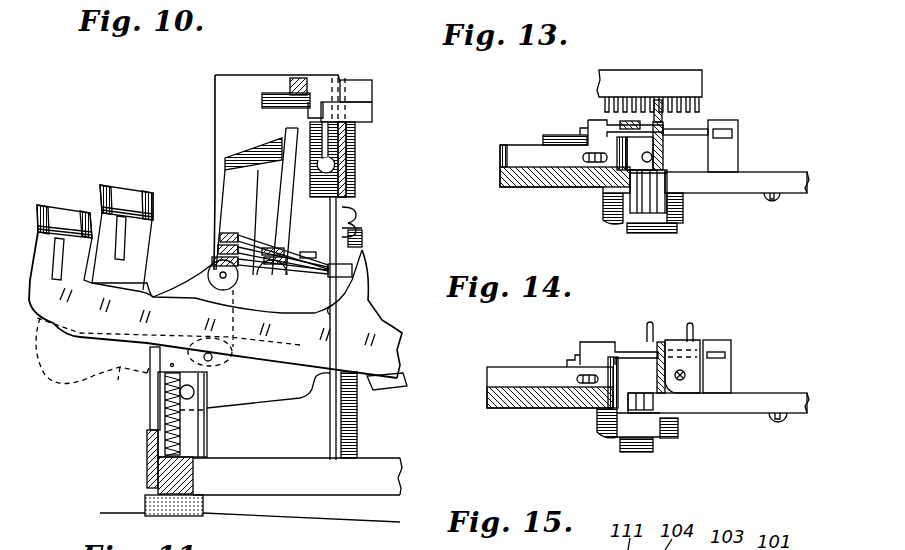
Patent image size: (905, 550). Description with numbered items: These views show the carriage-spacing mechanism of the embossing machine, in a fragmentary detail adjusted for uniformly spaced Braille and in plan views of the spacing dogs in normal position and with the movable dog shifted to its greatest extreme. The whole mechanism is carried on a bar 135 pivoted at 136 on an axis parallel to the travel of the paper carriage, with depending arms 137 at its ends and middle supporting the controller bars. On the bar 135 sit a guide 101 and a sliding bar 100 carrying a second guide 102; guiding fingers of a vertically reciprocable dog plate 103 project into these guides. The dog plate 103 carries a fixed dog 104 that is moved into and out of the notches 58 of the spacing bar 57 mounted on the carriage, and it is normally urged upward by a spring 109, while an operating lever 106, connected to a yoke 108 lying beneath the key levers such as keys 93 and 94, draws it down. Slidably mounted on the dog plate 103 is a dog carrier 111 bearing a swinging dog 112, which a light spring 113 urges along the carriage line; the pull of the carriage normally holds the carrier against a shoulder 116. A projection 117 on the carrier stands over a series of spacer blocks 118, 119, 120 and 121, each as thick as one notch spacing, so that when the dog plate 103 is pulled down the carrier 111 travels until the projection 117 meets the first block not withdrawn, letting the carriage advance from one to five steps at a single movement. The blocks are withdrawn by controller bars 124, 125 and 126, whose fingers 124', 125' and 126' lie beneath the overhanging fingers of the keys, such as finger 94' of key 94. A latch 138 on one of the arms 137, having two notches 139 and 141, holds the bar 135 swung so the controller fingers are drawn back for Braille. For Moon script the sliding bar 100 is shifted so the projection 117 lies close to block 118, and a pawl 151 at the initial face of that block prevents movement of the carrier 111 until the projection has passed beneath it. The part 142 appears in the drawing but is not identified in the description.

In FIG. 13, the spacing bar 57 is at (622, 78).
In FIG. 13, the notch of spacing bar 58 is at (703, 92).
In FIG. 10, the key lever 93 is at (135, 190).
In FIG. 10, the key lever 94 is at (241, 264).
In FIG. 10, the overhanging finger 94' is at (396, 226).
In FIG. 13, the sliding bar 100 is at (532, 157).
In FIG. 14, the sliding bar 100 is at (505, 375).
In FIG. 13, the guide 101 is at (738, 122).
In FIG. 14, the guide 101 is at (735, 352).
In FIG. 13, the guide 102 is at (605, 125).
In FIG. 14, the guide 102 is at (592, 342).
In FIG. 10, the dog plate 103 is at (355, 167).
In FIG. 13, the dog plate 103 is at (697, 130).
In FIG. 14, the dog plate 103 is at (718, 352).
In FIG. 10, the fixed dog 104 is at (368, 88).
In FIG. 13, the fixed dog 104 is at (660, 100).
In FIG. 14, the fixed dog 104 is at (651, 324).
In FIG. 10, the operating lever 106 is at (280, 402).
In FIG. 10, the yoke 108 is at (387, 381).
In FIG. 10, the spring 109 is at (357, 437).
In FIG. 10, the dog carrier 111 is at (355, 150).
In FIG. 13, the dog carrier 111 is at (600, 172).
In FIG. 14, the dog carrier 111 is at (672, 340).
In FIG. 10, the swinging dog 112 is at (370, 112).
In FIG. 13, the swinging dog 112 is at (665, 125).
In FIG. 14, the swinging dog 112 is at (694, 326).
In FIG. 10, the light spring 113 is at (332, 215).
In FIG. 10, the shoulder 116 is at (260, 130).
In FIG. 13, the shoulder 116 is at (618, 182).
In FIG. 14, the shoulder 116 is at (610, 406).
In FIG. 10, the projection 117 is at (272, 95).
In FIG. 13, the projection 117 is at (623, 213).
In FIG. 14, the projection 117 is at (662, 442).
In FIG. 13, the spacer block 118 is at (637, 225).
In FIG. 13, the spacer block 119 is at (650, 228).
In FIG. 13, the spacer block 120 is at (660, 228).
In FIG. 10, the spacer block 121 is at (276, 206).
In FIG. 13, the spacer block 121 is at (680, 222).
In FIG. 10, the controller bar 124 is at (252, 258).
In FIG. 10, the controller bar finger 124' is at (292, 283).
In FIG. 10, the controller bar 125 is at (242, 244).
In FIG. 10, the controller bar finger 125' is at (264, 279).
In FIG. 10, the controller bar 126 is at (247, 232).
In FIG. 10, the controller bar finger 126' is at (314, 244).
In FIG. 10, the bar 135 is at (298, 78).
In FIG. 13, the bar 135 is at (742, 177).
In FIG. 14, the bar 135 is at (737, 398).
In FIG. 10, the pivot 136 is at (313, 98).
In FIG. 10, the depending arm 137 is at (227, 175).
In FIG. 13, the depending arm 137 is at (652, 228).
In FIG. 14, the depending arm 137 is at (637, 453).
In FIG. 10, the latch 138 is at (66, 390).
In FIG. 10, the notch 139 is at (120, 369).
In FIG. 10, the notch 141 is at (140, 380).
In FIG. 10, the spring 142 is at (165, 407).
In FIG. 13, the pawl 151 is at (770, 202).
In FIG. 14, the pawl 151 is at (760, 420).